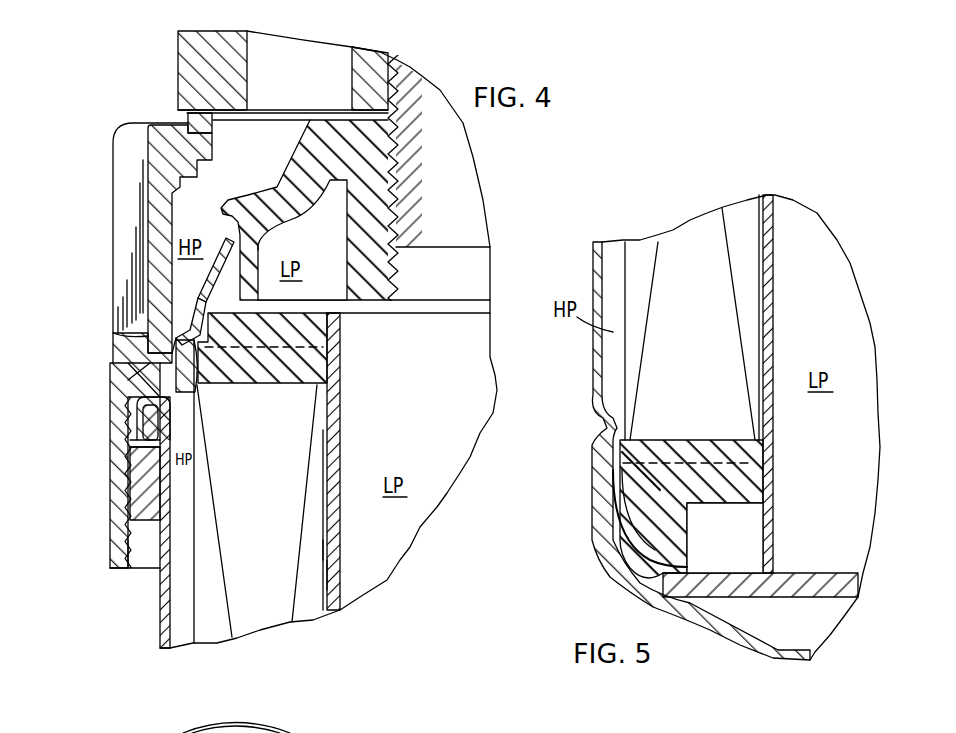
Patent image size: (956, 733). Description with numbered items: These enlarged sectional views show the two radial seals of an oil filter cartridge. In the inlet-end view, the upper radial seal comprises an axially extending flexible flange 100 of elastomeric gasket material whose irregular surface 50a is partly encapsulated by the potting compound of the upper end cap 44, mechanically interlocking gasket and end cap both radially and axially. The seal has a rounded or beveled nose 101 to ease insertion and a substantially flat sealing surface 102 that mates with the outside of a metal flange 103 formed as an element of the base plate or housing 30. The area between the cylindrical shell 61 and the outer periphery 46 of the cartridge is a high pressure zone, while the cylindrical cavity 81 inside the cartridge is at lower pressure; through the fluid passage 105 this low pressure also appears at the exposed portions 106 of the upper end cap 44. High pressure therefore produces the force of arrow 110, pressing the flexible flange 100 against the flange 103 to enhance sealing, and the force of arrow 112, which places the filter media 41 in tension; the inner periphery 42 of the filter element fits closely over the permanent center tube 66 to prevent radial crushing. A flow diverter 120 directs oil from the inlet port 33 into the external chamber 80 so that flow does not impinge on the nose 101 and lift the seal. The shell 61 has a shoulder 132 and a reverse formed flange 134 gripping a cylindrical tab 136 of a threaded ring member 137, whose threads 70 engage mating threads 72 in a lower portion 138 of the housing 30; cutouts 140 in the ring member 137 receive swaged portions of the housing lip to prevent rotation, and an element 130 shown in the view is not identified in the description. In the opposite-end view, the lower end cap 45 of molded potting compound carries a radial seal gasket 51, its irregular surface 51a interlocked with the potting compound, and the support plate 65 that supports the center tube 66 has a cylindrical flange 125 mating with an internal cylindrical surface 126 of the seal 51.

In FIG. 4, the housing (base plate) 30 is at (192, 60).
In FIG. 4, the inlet port 33 is at (275, 179).
In FIG. 4, the filter media 41 is at (262, 581).
In FIG. 4, the inner periphery of the filter element 42 is at (341, 573).
In FIG. 4, the upper end cap 44 is at (295, 372).
In FIG. 4, the outer periphery of the filter cartridge 46 is at (190, 600).
In FIG. 4, the irregular surface of the gasket 50a is at (203, 320).
In FIG. 4, the cylindrical shell 61 is at (162, 638).
In FIG. 4, the permanent center tube 66 is at (325, 540).
In FIG. 5, the permanent center tube 66 is at (770, 488).
In FIG. 4, the threads of the ring member 70 is at (125, 508).
In FIG. 4, the mating threads 72 is at (130, 555).
In FIG. 4, the external chamber 80 is at (178, 630).
In FIG. 4, the cylindrical cavity 81 is at (440, 441).
In FIG. 4, the flexible flange 100 is at (200, 270).
In FIG. 4, the nose 101 is at (223, 233).
In FIG. 4, the sealing surface 102 is at (255, 240).
In FIG. 4, the metal flange 103 is at (258, 252).
In FIG. 4, the fluid passage 105 is at (350, 300).
In FIG. 4, the exposed portions of the upper end cap 106 is at (284, 300).
In FIG. 4, the arrow 110 is at (196, 292).
In FIG. 4, the arrow 112 is at (247, 386).
In FIG. 4, the flow diverter 120 is at (222, 204).
In FIG. 4, the retainer block 130 is at (133, 357).
In FIG. 4, the shoulder 132 is at (125, 380).
In FIG. 4, the reverse formed flange 134 is at (132, 413).
In FIG. 4, the cylindrical tab 136 is at (127, 457).
In FIG. 4, the threaded ring member 137 is at (125, 488).
In FIG. 4, the lower portion of the housing 138 is at (125, 537).
In FIG. 4, the cutouts 140 is at (143, 445).
In FIG. 5, the lower end cap 45 is at (658, 437).
In FIG. 5, the radial seal gasket 51 is at (633, 513).
In FIG. 5, the irregular surface of the gasket 51a is at (650, 470).
In FIG. 5, the support plate 65 is at (783, 578).
In FIG. 5, the cylindrical flange 125 is at (663, 533).
In FIG. 5, the internal cylindrical surface 126 is at (665, 500).